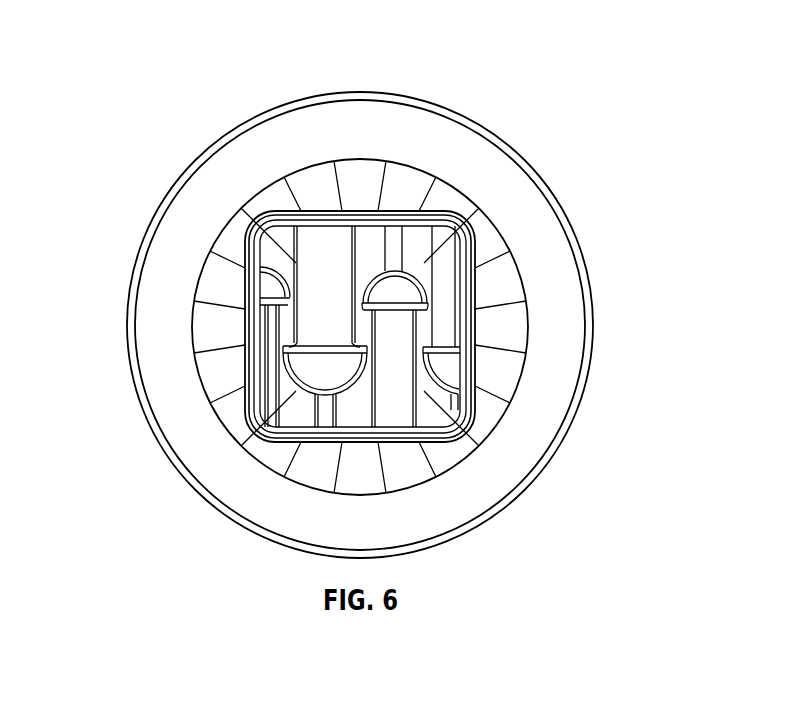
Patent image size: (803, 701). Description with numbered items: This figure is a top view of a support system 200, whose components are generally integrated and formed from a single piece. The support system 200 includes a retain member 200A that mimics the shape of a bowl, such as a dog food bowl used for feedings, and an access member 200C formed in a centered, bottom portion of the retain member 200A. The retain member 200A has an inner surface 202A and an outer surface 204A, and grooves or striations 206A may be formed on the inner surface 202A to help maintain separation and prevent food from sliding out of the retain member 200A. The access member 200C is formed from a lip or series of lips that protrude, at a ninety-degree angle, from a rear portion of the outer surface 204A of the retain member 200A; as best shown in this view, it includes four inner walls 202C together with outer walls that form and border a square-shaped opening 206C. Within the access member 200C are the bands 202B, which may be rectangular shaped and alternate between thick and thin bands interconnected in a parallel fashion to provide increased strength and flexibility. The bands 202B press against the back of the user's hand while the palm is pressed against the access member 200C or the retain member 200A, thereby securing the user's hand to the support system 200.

The support system 200 is at (611, 41).
The retain member 200A is at (126, 213).
The access member 200C is at (486, 289).
The inner surface 202A is at (473, 152).
The bands 202B is at (318, 262).
The inner walls 202C is at (413, 443).
The outer surface 204A is at (205, 500).
The grooves and/or striations 206A is at (207, 368).
The opening 206C is at (293, 408).